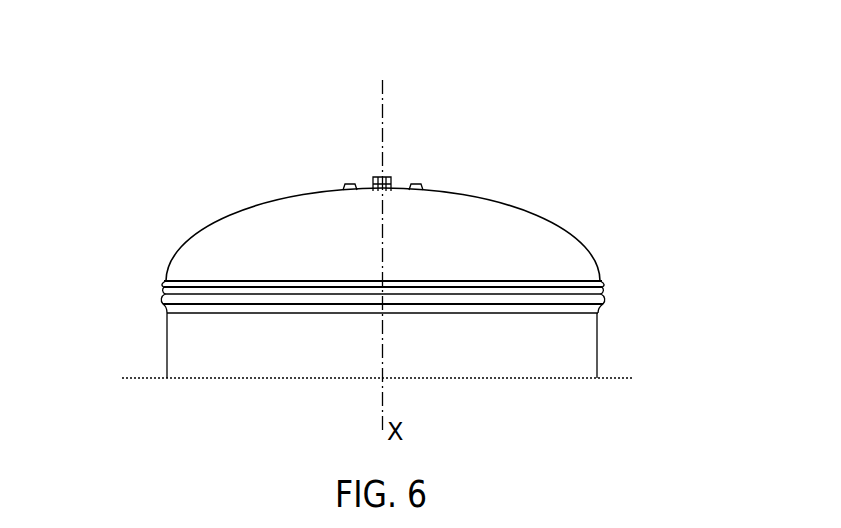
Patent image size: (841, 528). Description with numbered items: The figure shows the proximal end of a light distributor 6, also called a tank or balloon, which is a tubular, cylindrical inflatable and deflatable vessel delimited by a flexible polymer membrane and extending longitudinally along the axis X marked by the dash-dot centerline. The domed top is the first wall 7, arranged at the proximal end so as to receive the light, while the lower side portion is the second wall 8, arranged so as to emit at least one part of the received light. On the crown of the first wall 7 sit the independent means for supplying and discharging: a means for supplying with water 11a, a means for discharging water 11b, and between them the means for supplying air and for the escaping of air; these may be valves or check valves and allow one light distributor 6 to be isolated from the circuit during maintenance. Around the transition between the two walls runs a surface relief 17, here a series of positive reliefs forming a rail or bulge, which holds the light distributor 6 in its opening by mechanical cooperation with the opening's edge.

The light distributor 6 is at (360, 241).
The first wall 7 is at (587, 234).
The second wall 8 is at (180, 364).
The means for supplying with water 11a is at (340, 174).
The means for discharging water 11b is at (423, 174).
The surface relief 17 is at (152, 314).